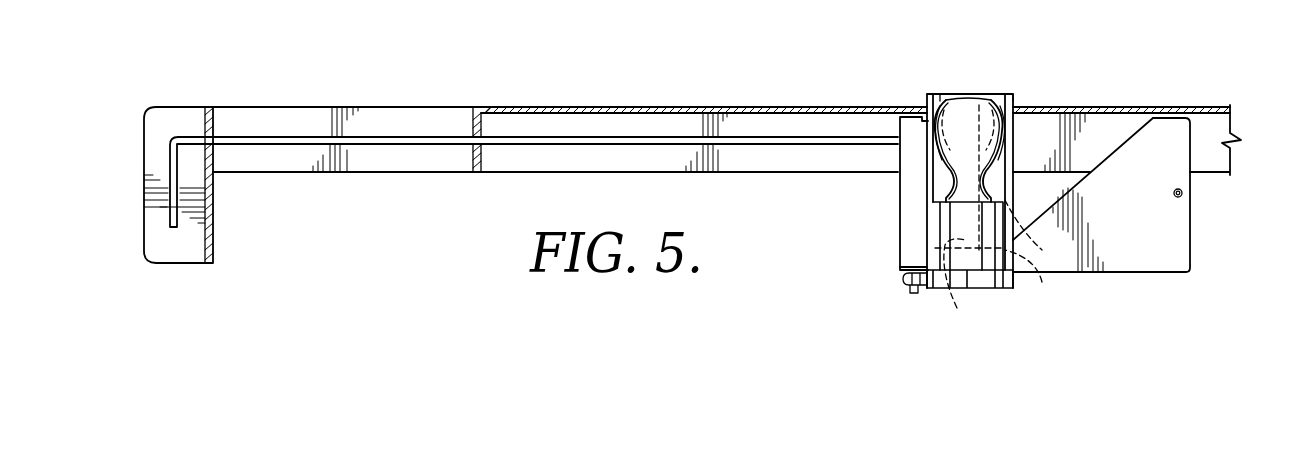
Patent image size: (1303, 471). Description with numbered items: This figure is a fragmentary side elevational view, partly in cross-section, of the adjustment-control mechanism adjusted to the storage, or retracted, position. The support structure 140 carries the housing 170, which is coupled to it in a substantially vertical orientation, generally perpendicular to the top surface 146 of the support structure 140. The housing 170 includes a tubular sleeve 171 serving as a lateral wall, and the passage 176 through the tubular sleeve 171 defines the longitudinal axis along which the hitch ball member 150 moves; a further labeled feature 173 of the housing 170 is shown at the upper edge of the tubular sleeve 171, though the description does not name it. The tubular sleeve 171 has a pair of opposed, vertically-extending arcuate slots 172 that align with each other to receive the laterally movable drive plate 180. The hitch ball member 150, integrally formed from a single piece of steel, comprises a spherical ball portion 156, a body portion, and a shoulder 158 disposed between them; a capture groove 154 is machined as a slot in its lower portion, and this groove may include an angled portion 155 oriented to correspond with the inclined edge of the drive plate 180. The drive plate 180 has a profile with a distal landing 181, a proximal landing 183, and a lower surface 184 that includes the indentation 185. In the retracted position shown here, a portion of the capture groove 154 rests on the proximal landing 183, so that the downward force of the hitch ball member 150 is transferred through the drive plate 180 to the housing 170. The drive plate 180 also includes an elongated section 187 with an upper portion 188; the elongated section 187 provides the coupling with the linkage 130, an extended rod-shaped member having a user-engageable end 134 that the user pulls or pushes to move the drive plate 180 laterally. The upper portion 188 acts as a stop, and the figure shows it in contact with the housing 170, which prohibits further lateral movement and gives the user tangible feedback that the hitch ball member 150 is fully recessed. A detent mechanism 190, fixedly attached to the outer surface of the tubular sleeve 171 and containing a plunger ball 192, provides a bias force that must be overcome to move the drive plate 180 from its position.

The linkage 130 is at (304, 150).
The user-engageable end 134 is at (170, 218).
The support structure 140 is at (618, 104).
The top surface 146 is at (703, 106).
The hitch ball member 150 is at (978, 89).
The capture groove 154 is at (1001, 203).
The angled portion 155 is at (1004, 265).
The ball portion 156 is at (945, 100).
The shoulder 158 is at (946, 192).
The housing 170 is at (1021, 149).
The tubular sleeve 171 is at (1015, 96).
The arcuate slots 172 is at (930, 165).
The housing top edge 173 is at (1003, 93).
The passage 176 is at (940, 94).
The drive plate 180 is at (1117, 229).
The distal landing 181 is at (1161, 118).
The proximal landing 183 is at (952, 290).
The lower surface 184 is at (1098, 271).
The indentation 185 is at (1153, 267).
The elongated section 187 is at (912, 228).
The upper portion 188 is at (906, 110).
The detent mechanism 190 is at (913, 293).
The plunger ball 192 is at (910, 267).